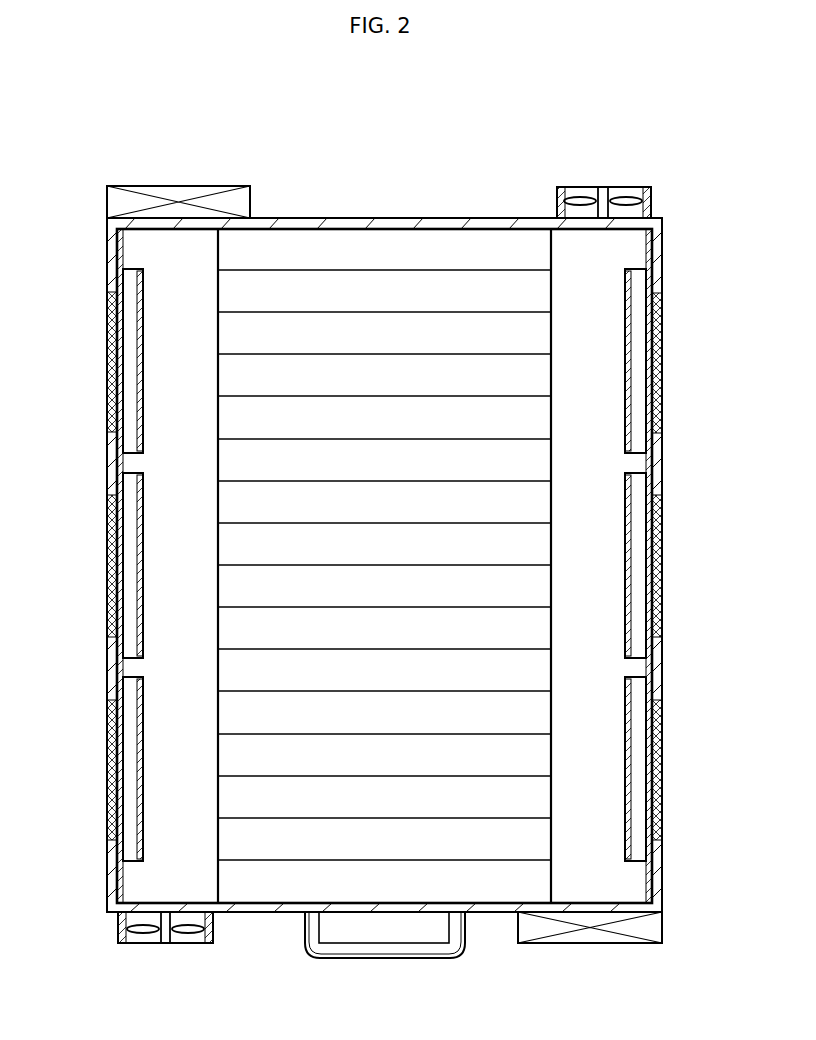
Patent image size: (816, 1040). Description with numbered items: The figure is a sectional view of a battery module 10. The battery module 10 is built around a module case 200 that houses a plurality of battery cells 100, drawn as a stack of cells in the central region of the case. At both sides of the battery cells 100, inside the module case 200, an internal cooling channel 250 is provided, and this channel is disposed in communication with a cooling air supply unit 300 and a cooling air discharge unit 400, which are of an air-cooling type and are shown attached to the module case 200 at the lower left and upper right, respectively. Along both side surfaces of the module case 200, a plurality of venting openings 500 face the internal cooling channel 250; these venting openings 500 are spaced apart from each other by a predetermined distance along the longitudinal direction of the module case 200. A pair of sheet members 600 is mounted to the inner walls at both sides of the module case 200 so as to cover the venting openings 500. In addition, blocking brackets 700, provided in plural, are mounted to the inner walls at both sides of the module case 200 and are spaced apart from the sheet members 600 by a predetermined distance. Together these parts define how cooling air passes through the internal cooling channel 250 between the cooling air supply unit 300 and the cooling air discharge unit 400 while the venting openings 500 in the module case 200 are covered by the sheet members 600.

The battery module 10 is at (97, 143).
The battery cell 100 is at (557, 331).
The module case 200 is at (337, 218).
The internal cooling channel 250 is at (163, 252).
The cooling air supply unit 300 is at (135, 960).
The cooling air discharge unit 400 is at (634, 178).
The venting opening 500 is at (107, 565).
The sheet member 600 is at (663, 764).
The blocking bracket 700 is at (617, 840).